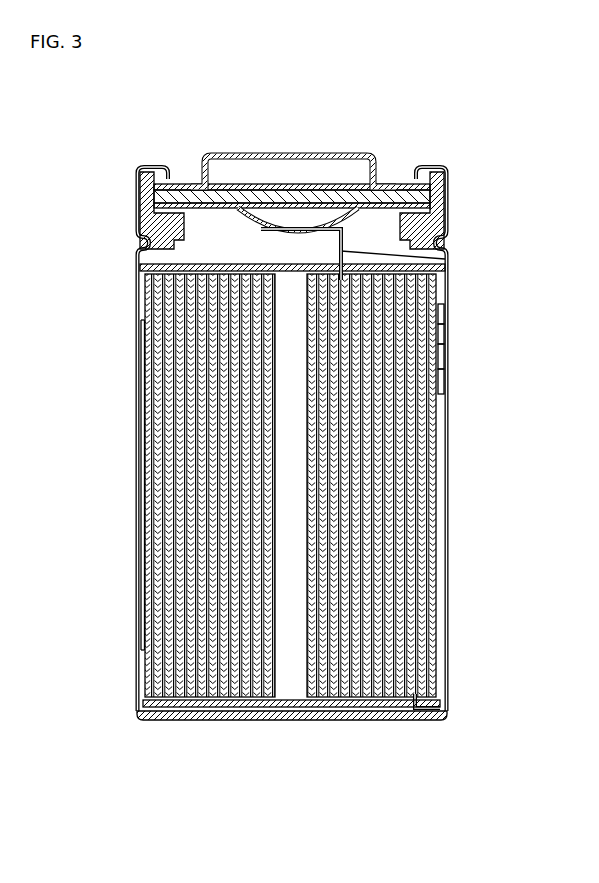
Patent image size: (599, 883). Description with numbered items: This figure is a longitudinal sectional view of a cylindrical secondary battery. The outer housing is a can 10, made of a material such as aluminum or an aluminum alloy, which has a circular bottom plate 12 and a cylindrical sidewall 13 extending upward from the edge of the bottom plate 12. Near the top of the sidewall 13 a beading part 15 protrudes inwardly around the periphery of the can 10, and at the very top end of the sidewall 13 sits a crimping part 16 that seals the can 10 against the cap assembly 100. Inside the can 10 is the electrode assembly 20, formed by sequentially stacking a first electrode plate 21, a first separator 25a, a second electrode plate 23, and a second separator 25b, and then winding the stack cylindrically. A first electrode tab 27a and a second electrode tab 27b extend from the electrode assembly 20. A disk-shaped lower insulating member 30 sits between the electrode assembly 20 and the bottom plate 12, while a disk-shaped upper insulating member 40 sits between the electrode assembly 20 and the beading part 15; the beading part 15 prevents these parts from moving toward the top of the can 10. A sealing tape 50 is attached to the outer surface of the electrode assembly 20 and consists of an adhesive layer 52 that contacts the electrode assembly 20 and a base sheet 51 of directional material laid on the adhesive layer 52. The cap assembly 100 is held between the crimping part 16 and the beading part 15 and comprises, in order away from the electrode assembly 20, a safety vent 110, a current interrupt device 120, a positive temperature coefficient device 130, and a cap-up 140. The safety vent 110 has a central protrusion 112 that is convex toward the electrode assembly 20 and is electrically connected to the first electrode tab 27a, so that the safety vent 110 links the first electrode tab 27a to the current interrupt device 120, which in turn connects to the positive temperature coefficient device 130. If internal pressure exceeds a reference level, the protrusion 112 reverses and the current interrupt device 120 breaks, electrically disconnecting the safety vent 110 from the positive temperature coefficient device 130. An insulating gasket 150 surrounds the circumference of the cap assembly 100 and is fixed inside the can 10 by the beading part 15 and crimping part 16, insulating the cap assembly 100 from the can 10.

The can 10 is at (262, 427).
The bottom plate 12 is at (292, 712).
The sidewall 13 is at (130, 350).
The beading part 15 is at (131, 241).
The crimping part 16 is at (146, 157).
The electrode assembly 20 is at (365, 468).
The first electrode plate 21 is at (434, 377).
The second electrode plate 23 is at (433, 323).
The first separator 25a is at (434, 350).
The second separator 25b is at (436, 300).
The first electrode tab 27a is at (437, 257).
The second electrode tab 27b is at (440, 692).
The lower insulating member 30 is at (185, 699).
The upper insulating member 40 is at (131, 259).
The sealing tape 50 is at (90, 485).
The base sheet 51 is at (131, 430).
The adhesive layer 52 is at (66, 428).
The cap assembly 100 is at (296, 155).
The safety vent 110 is at (200, 175).
The protrusion 112 is at (372, 84).
The current interrupt device 120 is at (334, 189).
The positive temperature coefficient device 130 is at (386, 172).
The cap-up 140 is at (283, 145).
The insulating gasket 150 is at (426, 163).